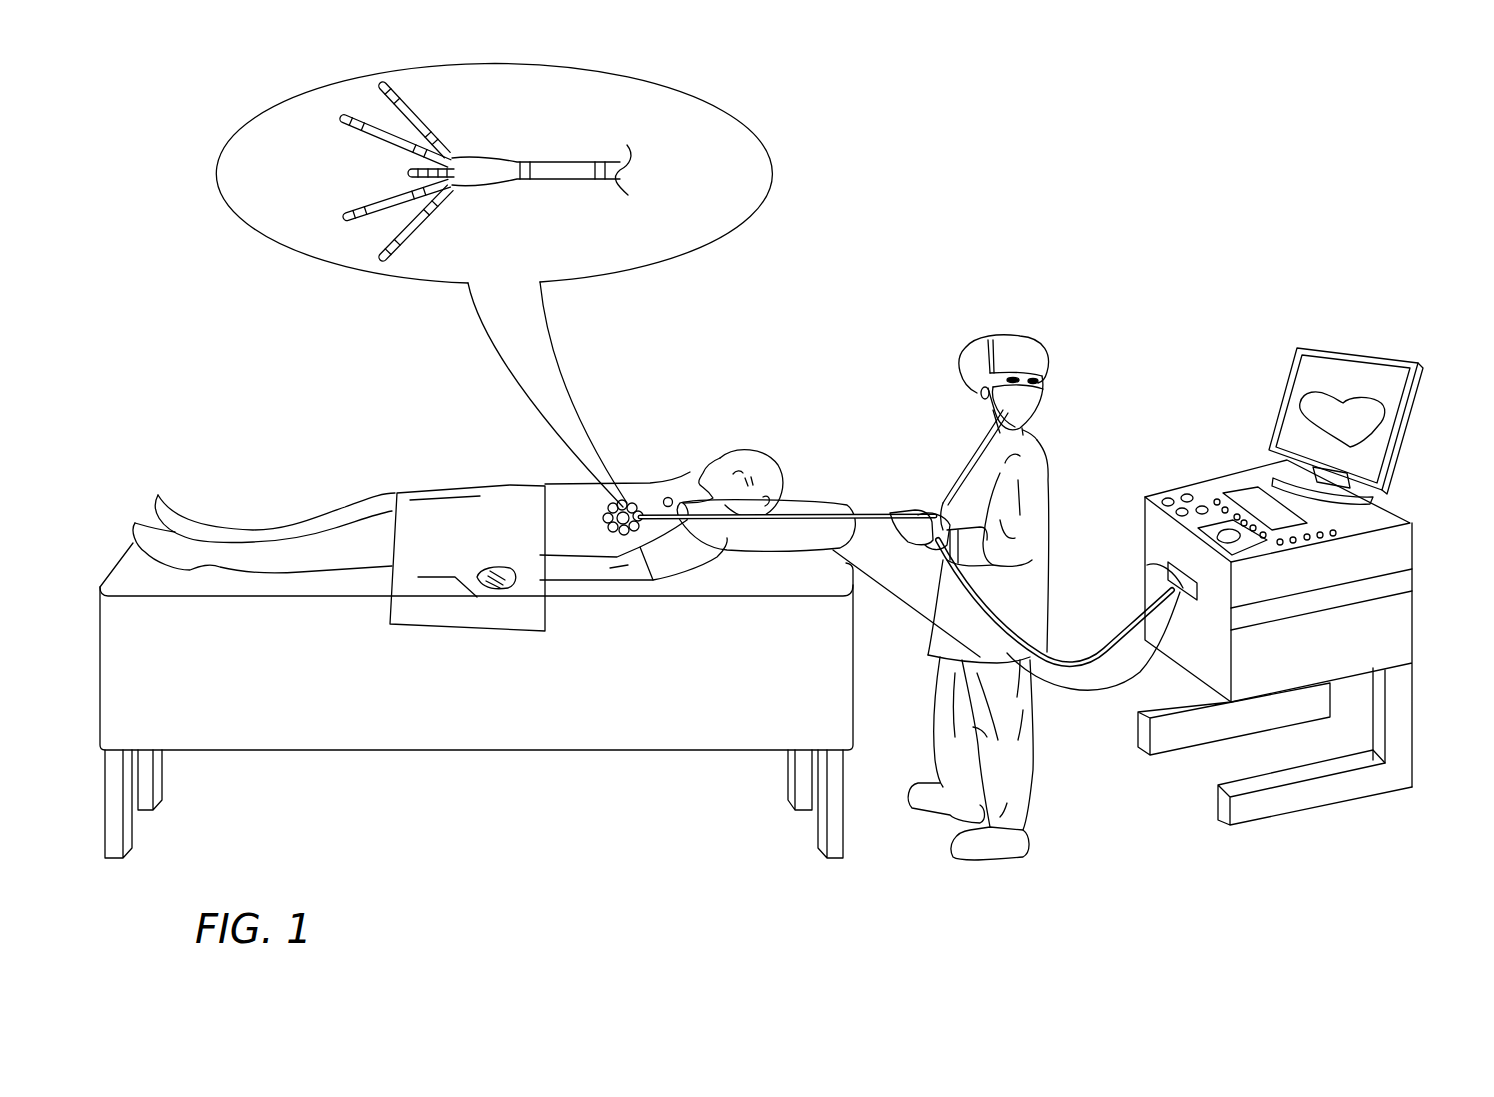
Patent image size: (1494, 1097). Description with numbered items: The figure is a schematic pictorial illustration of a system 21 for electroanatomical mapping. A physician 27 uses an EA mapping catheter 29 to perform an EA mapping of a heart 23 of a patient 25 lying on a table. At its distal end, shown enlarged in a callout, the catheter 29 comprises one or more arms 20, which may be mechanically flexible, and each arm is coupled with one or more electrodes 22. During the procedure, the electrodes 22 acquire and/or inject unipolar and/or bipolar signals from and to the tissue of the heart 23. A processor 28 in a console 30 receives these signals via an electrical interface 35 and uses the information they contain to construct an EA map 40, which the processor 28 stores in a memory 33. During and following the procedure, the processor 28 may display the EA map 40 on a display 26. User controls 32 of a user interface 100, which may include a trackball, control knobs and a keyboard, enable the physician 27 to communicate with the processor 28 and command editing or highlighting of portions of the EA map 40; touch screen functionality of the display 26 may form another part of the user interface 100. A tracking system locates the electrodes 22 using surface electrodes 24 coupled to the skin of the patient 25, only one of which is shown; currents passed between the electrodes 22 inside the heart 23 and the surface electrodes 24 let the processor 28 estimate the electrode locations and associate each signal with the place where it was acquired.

The arms 20 is at (427, 112).
The system 21 is at (1271, 195).
The electrodes 22 is at (400, 250).
The heart 23 is at (613, 503).
The surface electrodes 24 is at (665, 498).
The patient 25 is at (783, 455).
The display 26 is at (1408, 423).
The physician 27 is at (1046, 340).
The processor 28 is at (1412, 550).
The EA mapping catheter 29 is at (842, 512).
The console 30 is at (1412, 635).
The user controls 32 is at (1143, 495).
The memory 33 is at (1412, 588).
The electrical interface 35 is at (1147, 565).
The EA map 40 is at (1345, 400).
The user interface 100 is at (1202, 362).